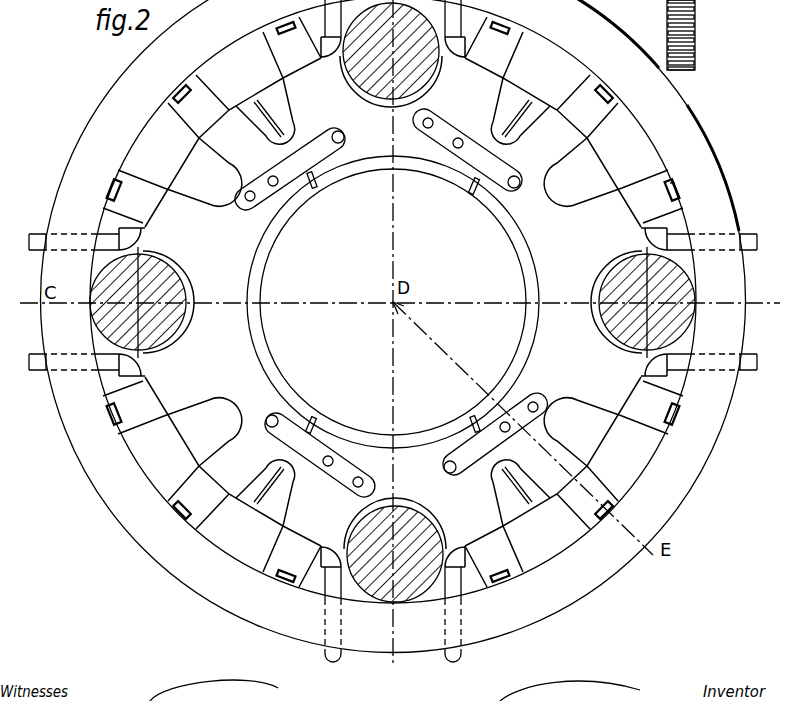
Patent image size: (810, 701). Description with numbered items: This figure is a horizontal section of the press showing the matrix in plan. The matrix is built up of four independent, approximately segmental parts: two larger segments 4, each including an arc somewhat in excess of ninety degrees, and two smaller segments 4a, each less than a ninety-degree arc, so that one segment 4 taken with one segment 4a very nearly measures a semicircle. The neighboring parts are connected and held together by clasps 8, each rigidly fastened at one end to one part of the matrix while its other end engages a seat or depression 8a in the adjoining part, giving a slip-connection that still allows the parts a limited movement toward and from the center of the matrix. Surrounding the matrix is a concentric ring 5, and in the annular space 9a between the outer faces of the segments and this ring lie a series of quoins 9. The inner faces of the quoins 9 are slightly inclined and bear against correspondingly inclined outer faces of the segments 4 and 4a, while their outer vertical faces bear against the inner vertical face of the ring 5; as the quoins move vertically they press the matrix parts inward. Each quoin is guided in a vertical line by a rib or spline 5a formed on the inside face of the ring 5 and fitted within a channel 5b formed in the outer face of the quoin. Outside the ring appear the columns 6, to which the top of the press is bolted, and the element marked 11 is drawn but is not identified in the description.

The segmental part of the matrix 4 is at (393, 302).
The segmental part of the matrix 4a is at (393, 293).
The ring 5 is at (130, 93).
The ribs or splines 5a is at (398, 315).
The channels 5b is at (670, 186).
The columns 6 is at (392, 302).
The clasp 8 is at (391, 303).
The seat or depression 8a is at (395, 315).
The quoins 9 is at (393, 302).
The annular space 9a is at (398, 303).
The pin 11 is at (393, 331).